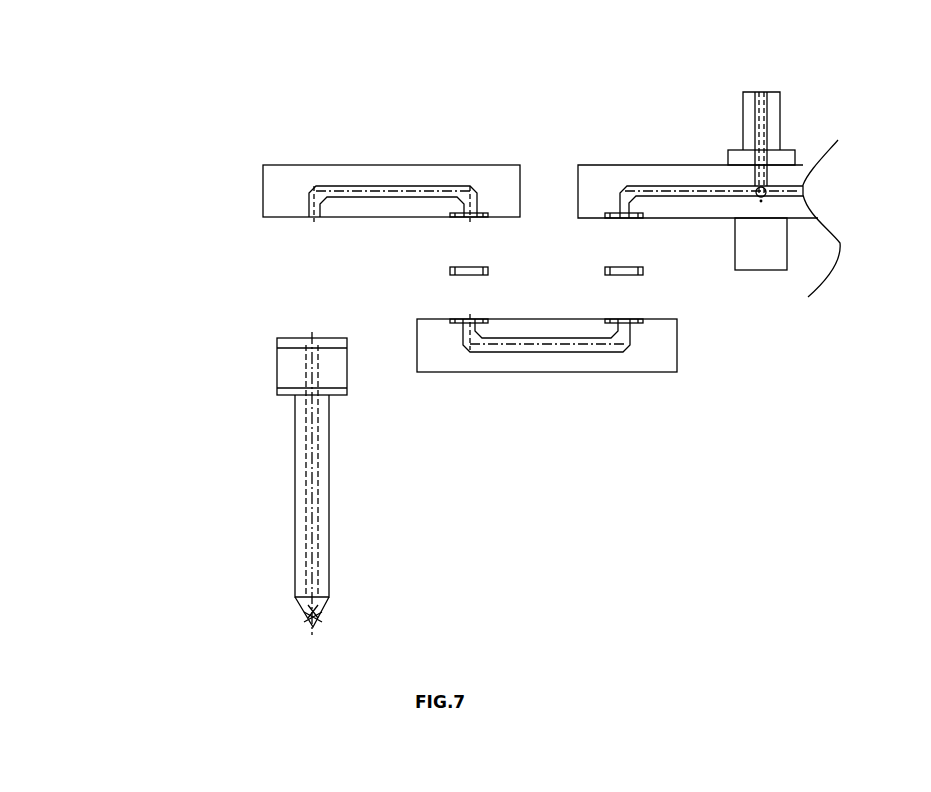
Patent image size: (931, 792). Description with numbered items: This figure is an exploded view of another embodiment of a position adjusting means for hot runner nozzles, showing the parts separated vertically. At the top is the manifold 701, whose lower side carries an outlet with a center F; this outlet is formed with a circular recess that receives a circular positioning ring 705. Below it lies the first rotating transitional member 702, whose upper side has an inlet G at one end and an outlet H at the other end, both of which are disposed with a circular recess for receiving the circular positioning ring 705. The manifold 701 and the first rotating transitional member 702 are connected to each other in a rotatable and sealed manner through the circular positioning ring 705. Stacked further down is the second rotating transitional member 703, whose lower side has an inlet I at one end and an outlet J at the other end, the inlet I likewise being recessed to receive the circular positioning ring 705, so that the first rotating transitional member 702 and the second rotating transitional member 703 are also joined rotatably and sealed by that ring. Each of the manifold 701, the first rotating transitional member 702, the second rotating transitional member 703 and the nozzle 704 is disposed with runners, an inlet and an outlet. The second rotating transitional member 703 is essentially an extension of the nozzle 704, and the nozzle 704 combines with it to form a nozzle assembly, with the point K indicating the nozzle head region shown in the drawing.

The manifold 701 is at (709, 201).
The first rotating transitional member 702 is at (617, 415).
The second rotating transitional member 703 is at (279, 228).
The nozzle 704 is at (197, 483).
The circular positioning ring 705 is at (485, 266).
The center of manifold outlet F is at (625, 218).
The inlet of first rotating transitional member G is at (627, 320).
The outlet of first rotating transitional member H is at (470, 322).
The inlet of second rotating transitional member I is at (468, 219).
The outlet of second rotating transitional member J is at (312, 221).
The bolt head K is at (312, 337).